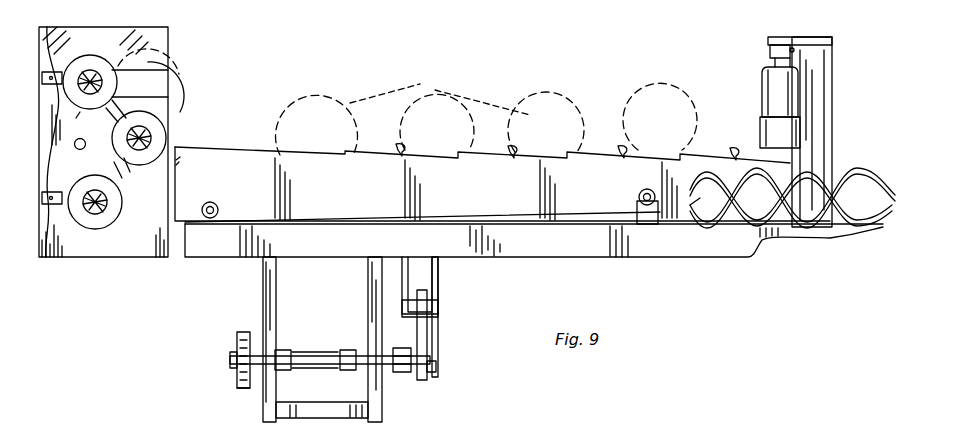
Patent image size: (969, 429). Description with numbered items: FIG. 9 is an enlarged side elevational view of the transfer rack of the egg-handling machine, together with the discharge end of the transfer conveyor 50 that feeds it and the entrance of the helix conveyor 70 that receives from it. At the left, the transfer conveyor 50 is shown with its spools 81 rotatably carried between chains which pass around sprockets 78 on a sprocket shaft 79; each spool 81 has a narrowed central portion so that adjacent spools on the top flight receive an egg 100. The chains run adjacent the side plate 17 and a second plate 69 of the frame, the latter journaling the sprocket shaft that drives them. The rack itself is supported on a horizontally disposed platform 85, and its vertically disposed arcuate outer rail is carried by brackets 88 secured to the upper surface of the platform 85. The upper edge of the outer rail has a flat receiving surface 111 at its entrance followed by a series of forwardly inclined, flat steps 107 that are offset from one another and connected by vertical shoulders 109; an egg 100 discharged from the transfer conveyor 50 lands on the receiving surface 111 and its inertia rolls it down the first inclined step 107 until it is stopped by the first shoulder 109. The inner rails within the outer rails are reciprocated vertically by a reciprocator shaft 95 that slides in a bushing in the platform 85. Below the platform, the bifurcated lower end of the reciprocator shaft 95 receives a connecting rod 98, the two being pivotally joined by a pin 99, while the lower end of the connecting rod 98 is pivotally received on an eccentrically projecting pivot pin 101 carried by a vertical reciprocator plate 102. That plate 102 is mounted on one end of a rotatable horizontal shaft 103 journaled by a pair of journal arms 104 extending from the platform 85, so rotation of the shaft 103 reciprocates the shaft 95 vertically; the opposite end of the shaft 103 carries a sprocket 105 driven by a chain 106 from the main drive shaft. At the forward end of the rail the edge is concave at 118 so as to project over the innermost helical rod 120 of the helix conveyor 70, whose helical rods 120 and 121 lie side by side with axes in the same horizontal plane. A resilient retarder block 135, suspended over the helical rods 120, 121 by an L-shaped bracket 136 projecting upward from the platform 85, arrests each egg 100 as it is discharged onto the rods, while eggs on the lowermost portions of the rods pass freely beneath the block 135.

The plate 17 is at (60, 153).
The transfer conveyor 50 is at (160, 104).
The second plate 69 is at (178, 156).
The helix conveyor 70 is at (550, 224).
The sprockets 78 is at (92, 133).
The sprocket shaft 79 is at (96, 155).
The spools 81 is at (100, 70).
The platform 85 is at (620, 256).
The brackets 88 is at (218, 212).
The reciprocator shaft 95 is at (438, 268).
The connecting rod 98 is at (428, 330).
The pin 99 is at (440, 306).
The egg 100 is at (160, 50).
The pivot pin 101 is at (437, 372).
The reciprocator plate 102 is at (410, 374).
The shaft 103 is at (340, 336).
The journal arms 104 is at (265, 298).
The sprocket 105 is at (238, 384).
The chain 106 is at (238, 340).
The steps 107 is at (548, 146).
The shoulders 109 is at (347, 157).
The receiving surface 111 is at (200, 147).
The concave forward edge 118 is at (697, 208).
The helical rod 120 is at (862, 178).
The helical rod 121 is at (802, 172).
The retarder block 135 is at (764, 87).
The L-shaped bracket 136 is at (815, 96).